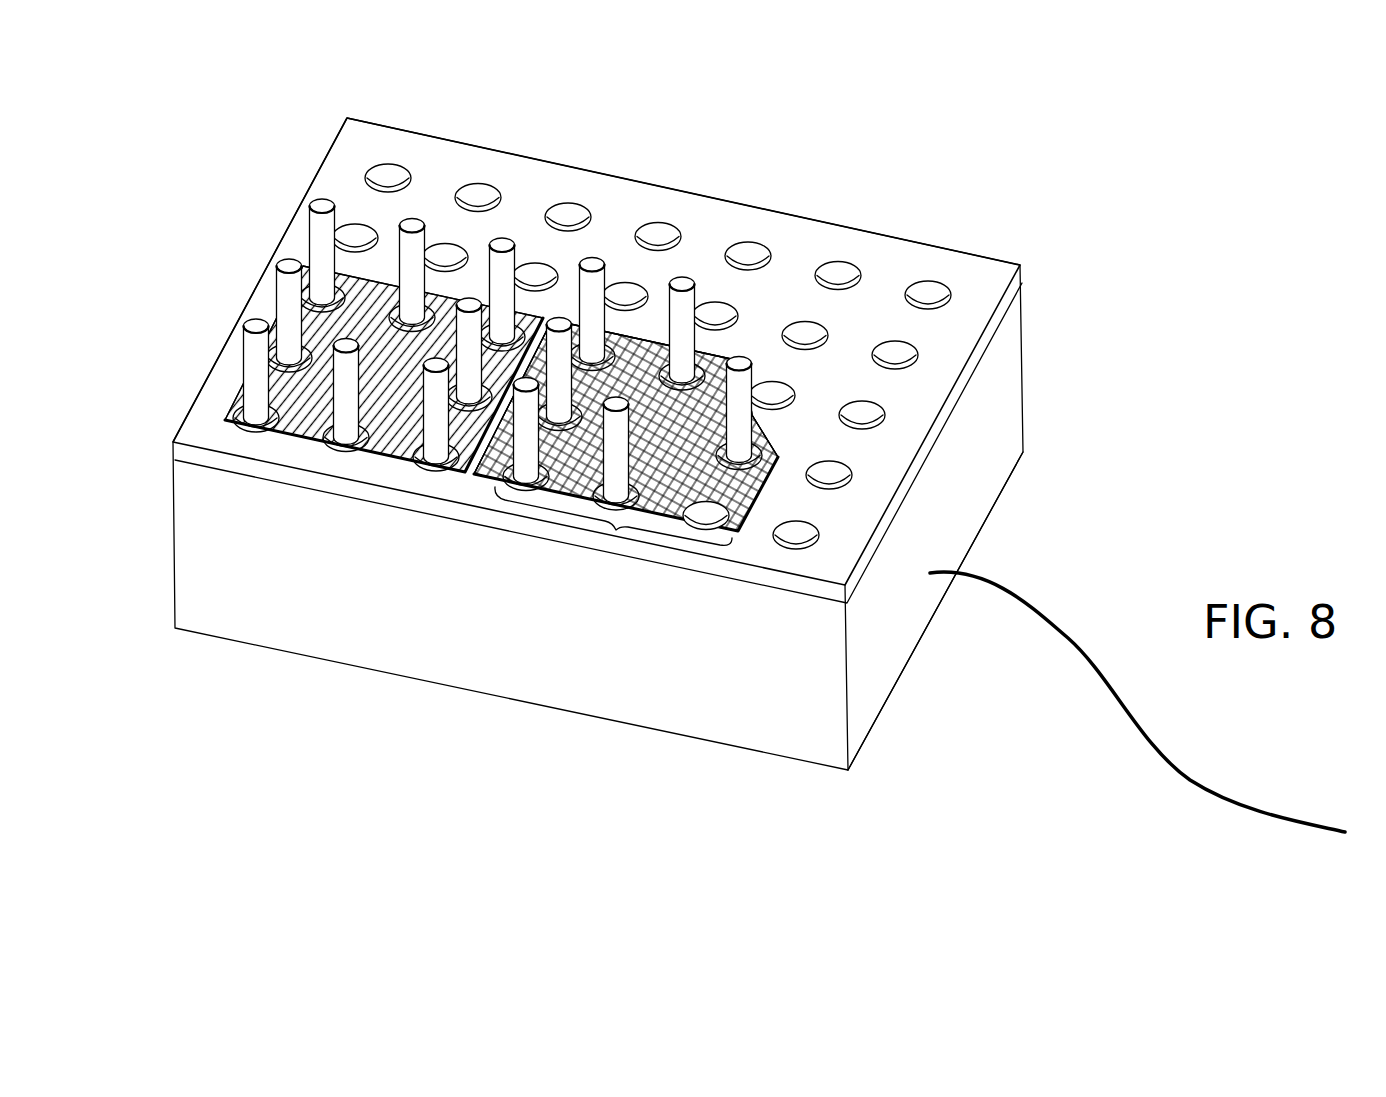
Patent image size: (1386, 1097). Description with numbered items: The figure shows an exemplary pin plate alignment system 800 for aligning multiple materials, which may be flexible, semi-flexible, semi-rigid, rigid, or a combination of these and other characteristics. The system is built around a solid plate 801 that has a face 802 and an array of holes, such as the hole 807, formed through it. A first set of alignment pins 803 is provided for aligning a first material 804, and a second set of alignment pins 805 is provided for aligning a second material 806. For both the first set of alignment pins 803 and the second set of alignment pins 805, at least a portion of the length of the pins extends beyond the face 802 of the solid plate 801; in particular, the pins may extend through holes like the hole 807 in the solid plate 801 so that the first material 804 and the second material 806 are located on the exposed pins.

The pin plate alignment system 800 is at (754, 446).
The solid plate 801 is at (1017, 290).
The face 802 is at (708, 212).
The first set of alignment pins 803 is at (511, 401).
The first material 804 is at (383, 458).
The second set of alignment pins 805 is at (616, 530).
The second material 806 is at (775, 462).
The hole 807 is at (935, 293).